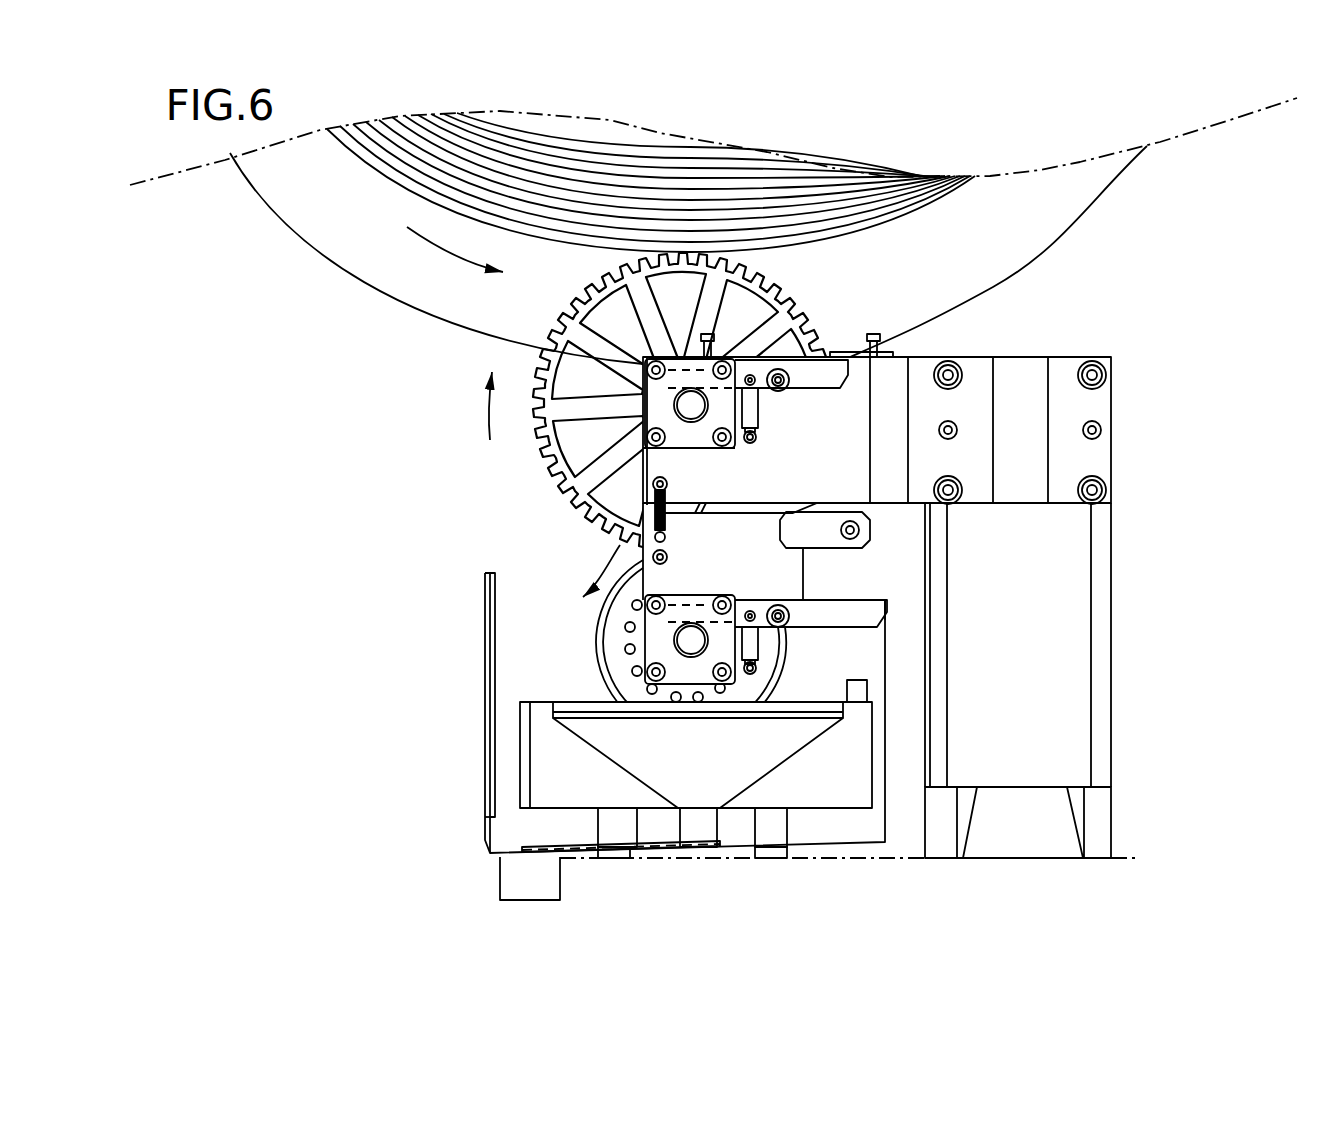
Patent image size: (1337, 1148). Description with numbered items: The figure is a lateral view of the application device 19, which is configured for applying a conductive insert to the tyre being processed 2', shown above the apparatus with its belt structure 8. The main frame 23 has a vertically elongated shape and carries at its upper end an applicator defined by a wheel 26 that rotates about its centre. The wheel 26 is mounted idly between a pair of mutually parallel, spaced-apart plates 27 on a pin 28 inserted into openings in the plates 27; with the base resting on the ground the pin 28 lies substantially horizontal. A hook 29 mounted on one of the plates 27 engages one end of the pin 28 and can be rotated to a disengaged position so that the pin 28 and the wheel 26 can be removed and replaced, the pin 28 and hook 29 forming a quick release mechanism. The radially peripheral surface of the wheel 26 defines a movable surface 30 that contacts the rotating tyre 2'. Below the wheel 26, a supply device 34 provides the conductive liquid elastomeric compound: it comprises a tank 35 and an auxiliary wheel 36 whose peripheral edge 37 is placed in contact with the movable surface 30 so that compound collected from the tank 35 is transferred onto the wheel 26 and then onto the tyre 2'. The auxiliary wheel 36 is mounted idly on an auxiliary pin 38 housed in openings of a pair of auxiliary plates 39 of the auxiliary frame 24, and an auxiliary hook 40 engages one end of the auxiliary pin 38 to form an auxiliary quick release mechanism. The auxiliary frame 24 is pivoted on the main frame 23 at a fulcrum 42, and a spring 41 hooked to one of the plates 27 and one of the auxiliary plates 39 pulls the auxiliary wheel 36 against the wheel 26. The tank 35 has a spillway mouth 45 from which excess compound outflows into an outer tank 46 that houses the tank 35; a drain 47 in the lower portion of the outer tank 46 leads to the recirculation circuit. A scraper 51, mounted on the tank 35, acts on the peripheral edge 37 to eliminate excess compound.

The tyre being processed 2' is at (1035, 251).
The belt structure 8 is at (420, 273).
The application device 19 is at (415, 617).
The main frame 23 is at (1112, 562).
The auxiliary frame 24 is at (640, 577).
The wheel 26 is at (632, 520).
The plates 27 is at (817, 465).
The pin 28 is at (687, 402).
The hook 29 is at (822, 380).
The movable surface 30 is at (813, 287).
The supply device 34 is at (557, 667).
The tank 35 is at (883, 723).
The auxiliary wheel 36 is at (592, 626).
The peripheral edge 37 is at (593, 647).
The auxiliary pin 38 is at (690, 640).
The auxiliary plates 39 is at (720, 558).
The auxiliary hook 40 is at (810, 613).
The spring 41 is at (547, 480).
The fulcrum 42 is at (850, 530).
The spillway mouth 45 is at (565, 712).
The outer tank 46 is at (483, 690).
The drain 47 is at (523, 853).
The scraper 51 is at (882, 622).